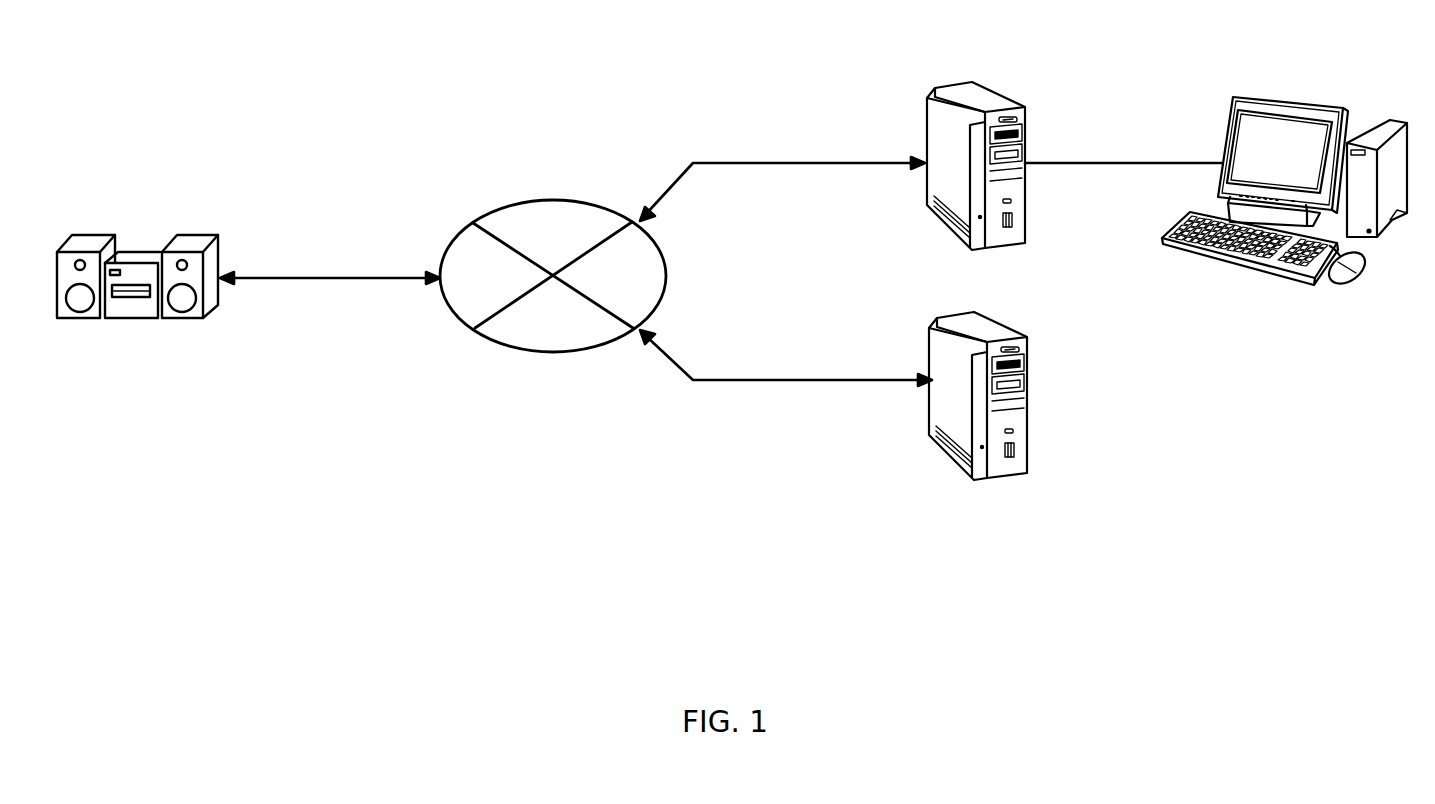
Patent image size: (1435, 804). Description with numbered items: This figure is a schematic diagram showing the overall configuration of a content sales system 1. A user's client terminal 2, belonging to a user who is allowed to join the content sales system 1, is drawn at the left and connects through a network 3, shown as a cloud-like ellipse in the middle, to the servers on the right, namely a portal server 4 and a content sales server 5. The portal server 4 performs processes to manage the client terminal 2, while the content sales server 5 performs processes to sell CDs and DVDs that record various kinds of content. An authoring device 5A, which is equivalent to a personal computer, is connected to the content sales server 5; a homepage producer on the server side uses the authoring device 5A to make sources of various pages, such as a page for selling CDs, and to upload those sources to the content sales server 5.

The content sales system 1 is at (833, 612).
The client terminal 2 is at (128, 318).
The network 3 is at (667, 276).
The portal server 4 is at (950, 452).
The content sales server 5 is at (952, 82).
The authoring device 5A is at (1308, 102).